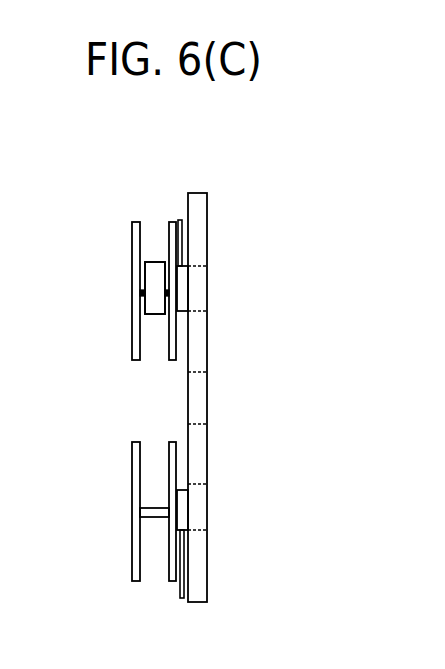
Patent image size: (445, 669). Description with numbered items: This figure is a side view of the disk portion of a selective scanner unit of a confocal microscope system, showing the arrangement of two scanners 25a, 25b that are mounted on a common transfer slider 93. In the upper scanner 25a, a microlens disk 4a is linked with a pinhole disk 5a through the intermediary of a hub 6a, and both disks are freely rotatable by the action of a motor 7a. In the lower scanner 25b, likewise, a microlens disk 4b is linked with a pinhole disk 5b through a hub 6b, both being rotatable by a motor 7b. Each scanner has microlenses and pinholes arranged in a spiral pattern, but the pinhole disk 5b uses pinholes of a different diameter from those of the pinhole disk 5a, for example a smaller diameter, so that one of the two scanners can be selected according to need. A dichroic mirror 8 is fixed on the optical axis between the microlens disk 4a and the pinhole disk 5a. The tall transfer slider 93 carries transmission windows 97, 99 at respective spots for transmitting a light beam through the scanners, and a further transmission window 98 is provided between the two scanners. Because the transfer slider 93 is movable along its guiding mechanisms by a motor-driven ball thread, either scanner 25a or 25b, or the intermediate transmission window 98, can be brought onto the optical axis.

The transfer slider 93 is at (198, 193).
The transmission window 97 is at (199, 276).
The transmission window 98 is at (198, 387).
The transmission window 99 is at (197, 497).
The scanner 25a is at (114, 309).
The scanner 25b is at (114, 494).
The microlens disk 4a is at (135, 221).
The microlens disk 4b is at (133, 582).
The pinhole disk 5a is at (172, 220).
The pinhole disk 5b is at (170, 583).
The hub 6a is at (145, 283).
The hub 6b is at (157, 518).
The motor 7a is at (181, 220).
The motor 7b is at (183, 600).
The dichroic mirror 8 is at (149, 262).